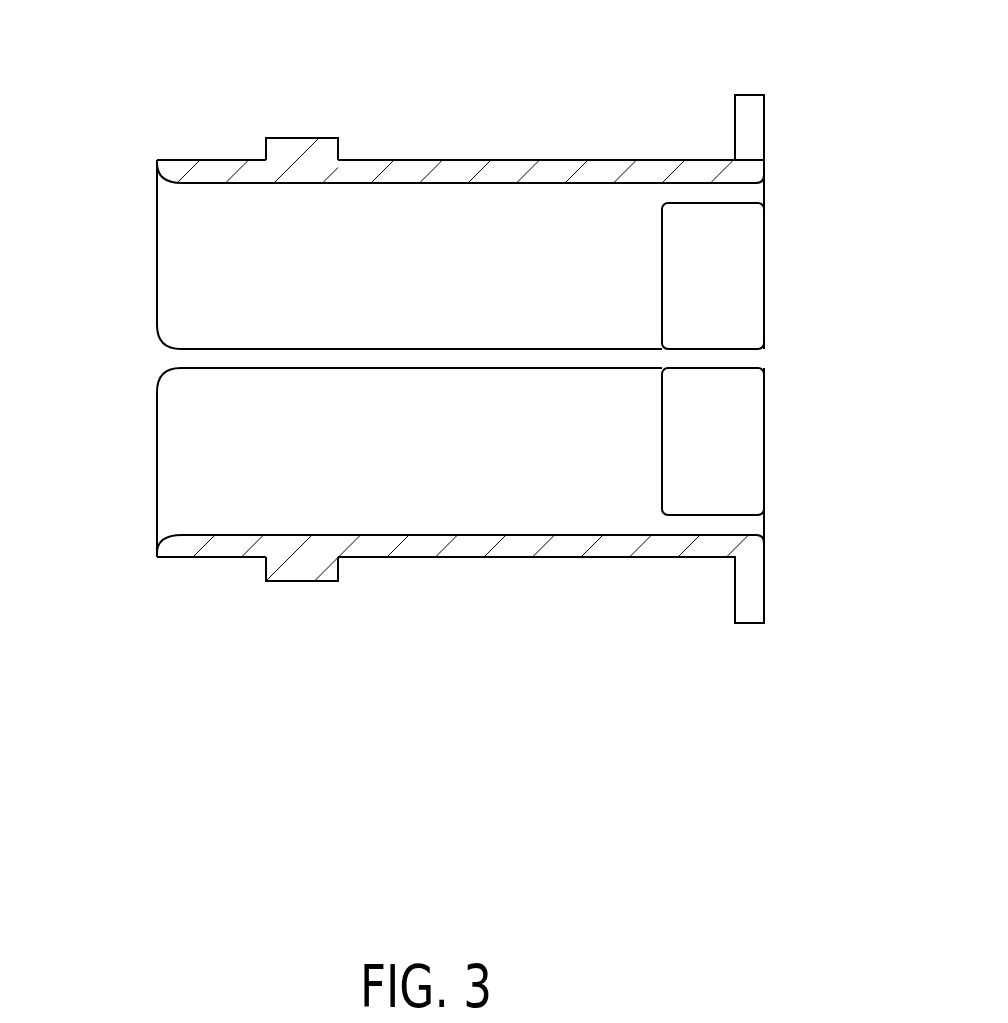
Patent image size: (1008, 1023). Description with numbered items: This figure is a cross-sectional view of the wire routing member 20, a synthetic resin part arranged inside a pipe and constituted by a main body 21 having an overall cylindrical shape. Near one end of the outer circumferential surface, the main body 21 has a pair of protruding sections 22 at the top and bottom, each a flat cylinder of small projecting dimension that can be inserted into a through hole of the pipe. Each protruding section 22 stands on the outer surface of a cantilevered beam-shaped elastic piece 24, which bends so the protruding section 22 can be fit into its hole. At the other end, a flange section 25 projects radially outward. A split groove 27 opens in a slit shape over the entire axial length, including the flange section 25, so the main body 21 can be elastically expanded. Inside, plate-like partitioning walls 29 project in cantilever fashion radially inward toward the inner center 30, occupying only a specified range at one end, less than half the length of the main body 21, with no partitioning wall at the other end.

The wire routing member 20 is at (596, 160).
The main body 21 is at (508, 168).
The protruding section 22 is at (302, 145).
The elastic piece 24 is at (212, 167).
The flange section 25 is at (757, 127).
The split groove 27 is at (182, 350).
The partitioning wall 29 is at (738, 281).
The inner center 30 is at (748, 359).